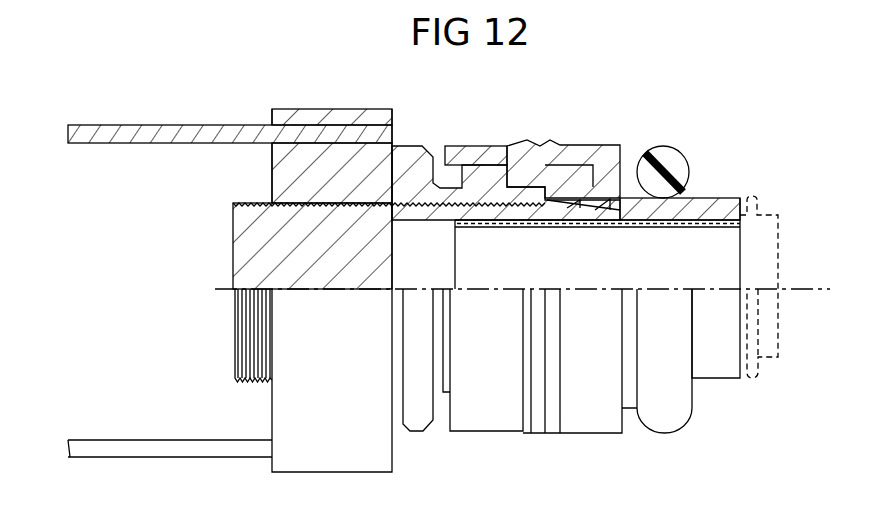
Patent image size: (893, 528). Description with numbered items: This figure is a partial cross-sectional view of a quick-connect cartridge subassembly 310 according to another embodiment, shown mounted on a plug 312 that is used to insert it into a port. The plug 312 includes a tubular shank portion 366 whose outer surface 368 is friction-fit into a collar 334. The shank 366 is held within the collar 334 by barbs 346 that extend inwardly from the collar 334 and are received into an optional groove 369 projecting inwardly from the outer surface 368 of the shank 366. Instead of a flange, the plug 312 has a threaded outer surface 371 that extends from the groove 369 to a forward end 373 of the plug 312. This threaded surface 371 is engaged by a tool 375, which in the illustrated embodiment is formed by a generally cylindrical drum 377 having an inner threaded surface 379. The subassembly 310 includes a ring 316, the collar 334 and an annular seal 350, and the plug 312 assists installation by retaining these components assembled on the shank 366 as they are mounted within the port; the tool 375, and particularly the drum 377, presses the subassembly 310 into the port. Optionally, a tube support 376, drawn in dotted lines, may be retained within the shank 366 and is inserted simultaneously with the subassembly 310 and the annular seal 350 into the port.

The subassembly 310 is at (628, 99).
The plug 312 is at (226, 242).
The ring 316 is at (488, 136).
The collar 334 is at (630, 148).
The barbs 346 is at (583, 205).
The annular seal 350 is at (665, 148).
The tubular shank portion 366 is at (722, 387).
The outer surface 368 is at (731, 197).
The groove 369 is at (542, 205).
The threaded outer surface 371 is at (266, 203).
The forward end 373 is at (234, 336).
The tool 375 is at (330, 104).
The tube support 376 is at (768, 258).
The drum 377 is at (345, 462).
The inner threaded surface 379 is at (325, 200).